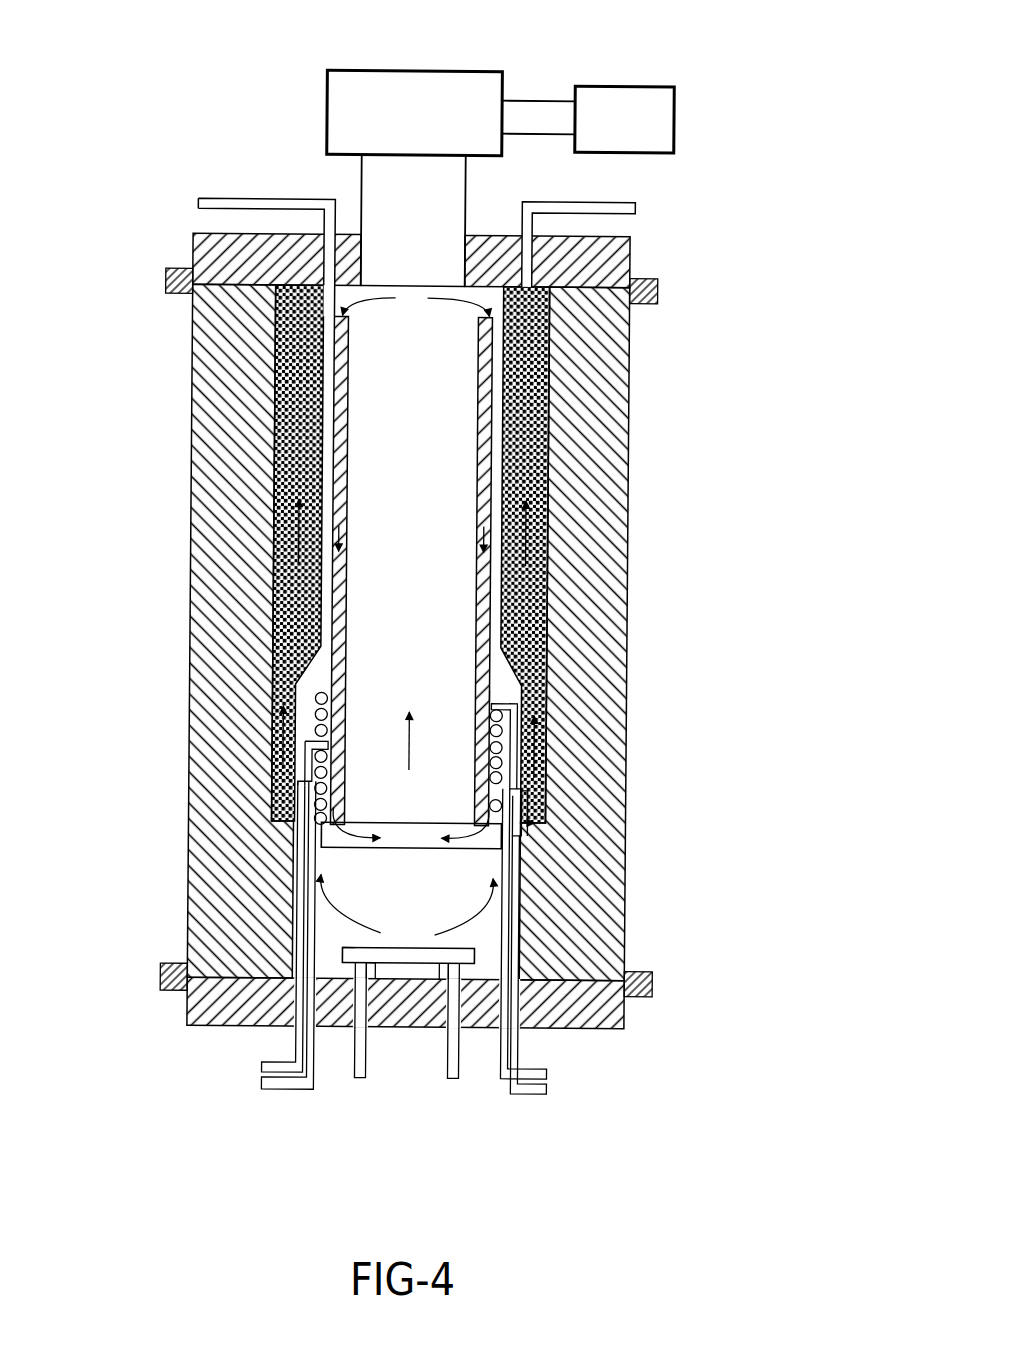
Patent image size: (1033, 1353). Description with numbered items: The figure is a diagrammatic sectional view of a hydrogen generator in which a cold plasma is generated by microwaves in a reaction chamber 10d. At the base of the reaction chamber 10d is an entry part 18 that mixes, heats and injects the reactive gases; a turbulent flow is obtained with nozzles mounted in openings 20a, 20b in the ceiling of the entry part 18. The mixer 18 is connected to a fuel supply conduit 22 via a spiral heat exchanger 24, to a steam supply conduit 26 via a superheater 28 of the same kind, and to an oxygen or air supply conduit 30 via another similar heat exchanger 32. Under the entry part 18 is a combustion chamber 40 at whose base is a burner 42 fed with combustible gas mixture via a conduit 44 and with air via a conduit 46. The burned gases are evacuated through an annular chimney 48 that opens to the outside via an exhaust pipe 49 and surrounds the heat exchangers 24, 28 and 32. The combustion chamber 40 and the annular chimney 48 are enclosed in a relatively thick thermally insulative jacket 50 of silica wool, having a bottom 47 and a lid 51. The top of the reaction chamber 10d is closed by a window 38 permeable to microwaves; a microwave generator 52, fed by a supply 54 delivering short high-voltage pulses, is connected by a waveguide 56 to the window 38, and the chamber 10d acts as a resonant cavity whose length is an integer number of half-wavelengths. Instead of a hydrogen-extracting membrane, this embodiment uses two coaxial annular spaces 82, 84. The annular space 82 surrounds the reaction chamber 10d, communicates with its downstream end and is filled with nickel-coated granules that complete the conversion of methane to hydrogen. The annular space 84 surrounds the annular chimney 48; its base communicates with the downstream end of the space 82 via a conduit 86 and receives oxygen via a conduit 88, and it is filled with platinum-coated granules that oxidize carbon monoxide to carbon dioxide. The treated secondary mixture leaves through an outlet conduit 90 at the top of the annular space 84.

The reaction chamber 10d is at (430, 440).
The entry part 18 is at (440, 860).
The opening 20a is at (512, 789).
The opening 20b is at (322, 803).
The fuel supply conduit 22 is at (560, 1088).
The spiral heat exchanger 24 is at (533, 815).
The steam supply conduit 26 is at (256, 1068).
The superheater 28 is at (328, 740).
The oxygen supply conduit 30 is at (560, 1073).
The heat exchanger 32 is at (505, 730).
The window 38 is at (413, 290).
The combustion chamber 40 is at (410, 918).
The burner 42 is at (350, 948).
The conduit 44 is at (457, 1092).
The conduit 46 is at (364, 1092).
The bottom 47 is at (583, 1010).
The annular chimney 48 is at (515, 698).
The exhaust pipe 49 is at (192, 205).
The thermally insulative jacket 50 is at (594, 621).
The lid 51 is at (600, 263).
The microwave generator 52 is at (420, 104).
The supply 54 is at (618, 108).
The waveguide 56 is at (397, 228).
The annular space 82 is at (483, 457).
The annular space 84 is at (525, 585).
The conduit 86 is at (503, 838).
The conduit 88 is at (256, 1085).
The outlet conduit 90 is at (636, 206).